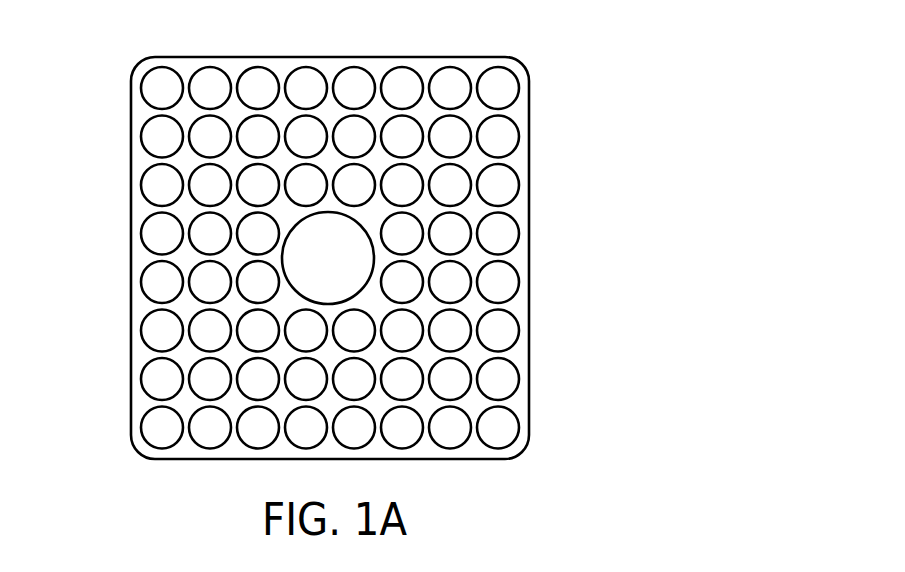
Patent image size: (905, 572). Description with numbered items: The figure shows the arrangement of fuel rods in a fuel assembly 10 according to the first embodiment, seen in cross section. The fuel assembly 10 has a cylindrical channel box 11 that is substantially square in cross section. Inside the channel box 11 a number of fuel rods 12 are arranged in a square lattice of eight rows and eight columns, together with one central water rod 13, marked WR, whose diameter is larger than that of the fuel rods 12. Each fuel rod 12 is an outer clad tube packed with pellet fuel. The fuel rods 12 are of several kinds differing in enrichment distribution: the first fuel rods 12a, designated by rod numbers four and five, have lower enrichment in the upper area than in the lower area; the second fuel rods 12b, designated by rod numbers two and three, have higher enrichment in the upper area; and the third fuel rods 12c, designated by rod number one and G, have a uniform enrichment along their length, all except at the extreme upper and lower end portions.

The fuel assembly 10 is at (560, 108).
The channel box 11 is at (370, 258).
The fuel rods 12 is at (621, 222).
The first fuel rods 12a is at (550, 381).
The second fuel rods 12b is at (550, 209).
The third fuel rods 12c is at (501, 306).
The water rod 13 is at (282, 256).